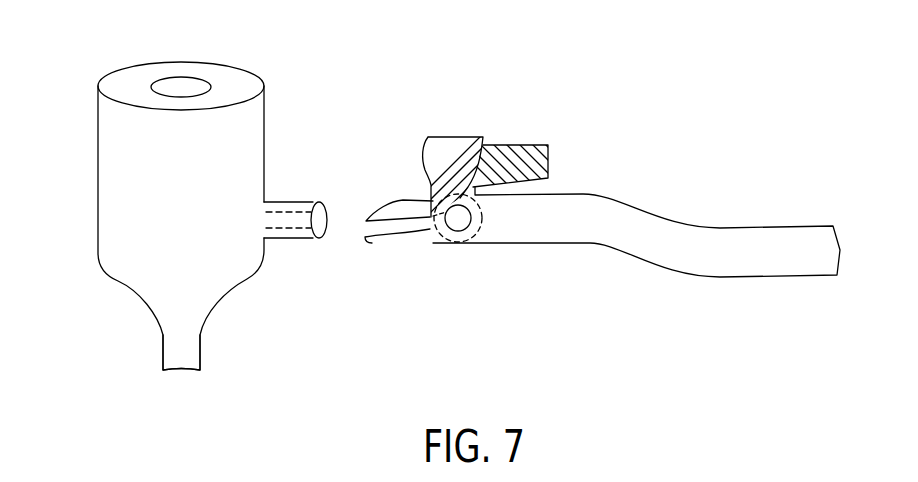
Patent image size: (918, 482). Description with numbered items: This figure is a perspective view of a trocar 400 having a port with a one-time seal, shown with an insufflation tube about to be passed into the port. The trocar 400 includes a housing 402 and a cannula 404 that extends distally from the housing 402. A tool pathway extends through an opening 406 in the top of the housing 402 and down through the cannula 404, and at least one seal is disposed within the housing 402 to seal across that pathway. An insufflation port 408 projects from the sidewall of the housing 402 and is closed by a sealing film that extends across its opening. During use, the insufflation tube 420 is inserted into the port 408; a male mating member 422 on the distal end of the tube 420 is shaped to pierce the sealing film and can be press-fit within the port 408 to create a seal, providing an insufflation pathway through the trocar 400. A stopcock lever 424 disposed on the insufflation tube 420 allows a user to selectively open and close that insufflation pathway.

The trocar 400 is at (317, 93).
The housing 402 is at (98, 181).
The cannula 404 is at (201, 337).
The opening 406 is at (189, 77).
The insufflation port 408 is at (300, 201).
The insufflation tube 420 is at (672, 228).
The male mating member 422 is at (403, 244).
The stopcock lever 424 is at (517, 155).